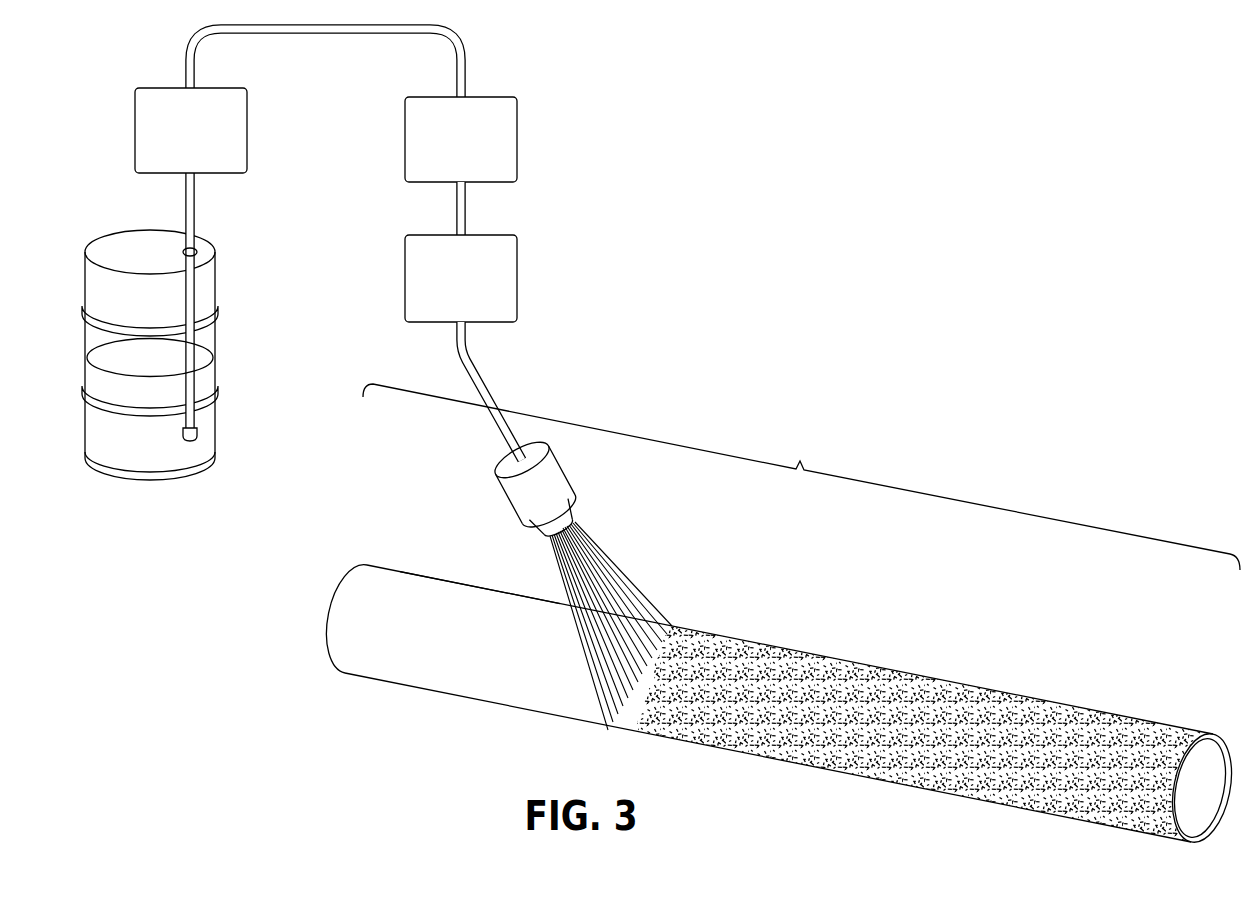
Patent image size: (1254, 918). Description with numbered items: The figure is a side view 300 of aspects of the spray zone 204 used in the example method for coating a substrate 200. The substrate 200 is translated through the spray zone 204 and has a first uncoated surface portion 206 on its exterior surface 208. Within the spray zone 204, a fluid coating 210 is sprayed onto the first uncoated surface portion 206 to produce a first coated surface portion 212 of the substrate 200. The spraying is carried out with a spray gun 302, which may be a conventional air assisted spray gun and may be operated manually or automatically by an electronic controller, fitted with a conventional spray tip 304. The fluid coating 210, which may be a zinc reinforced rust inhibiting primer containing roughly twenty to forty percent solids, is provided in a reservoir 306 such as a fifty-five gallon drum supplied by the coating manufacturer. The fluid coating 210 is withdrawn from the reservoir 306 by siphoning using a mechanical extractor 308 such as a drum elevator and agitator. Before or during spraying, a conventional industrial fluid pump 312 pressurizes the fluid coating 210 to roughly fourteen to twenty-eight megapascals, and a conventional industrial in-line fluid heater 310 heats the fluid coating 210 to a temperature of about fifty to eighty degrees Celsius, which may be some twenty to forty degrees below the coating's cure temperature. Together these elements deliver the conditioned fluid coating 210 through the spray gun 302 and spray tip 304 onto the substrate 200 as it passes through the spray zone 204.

The side view 300 is at (812, 117).
The mechanical extractor 308 is at (171, 150).
The fluid pump 312 is at (441, 160).
The fluid heater 310 is at (441, 296).
The reservoir 306 is at (216, 338).
The fluid coating 210 is at (157, 455).
The spray gun 302 is at (560, 470).
The spray tip 304 is at (577, 510).
The spray zone 204 is at (801, 477).
The first uncoated surface portion 206 is at (490, 589).
The exterior surface 208 is at (333, 600).
The substrate 200 is at (757, 683).
The first coated surface portion 212 is at (930, 710).